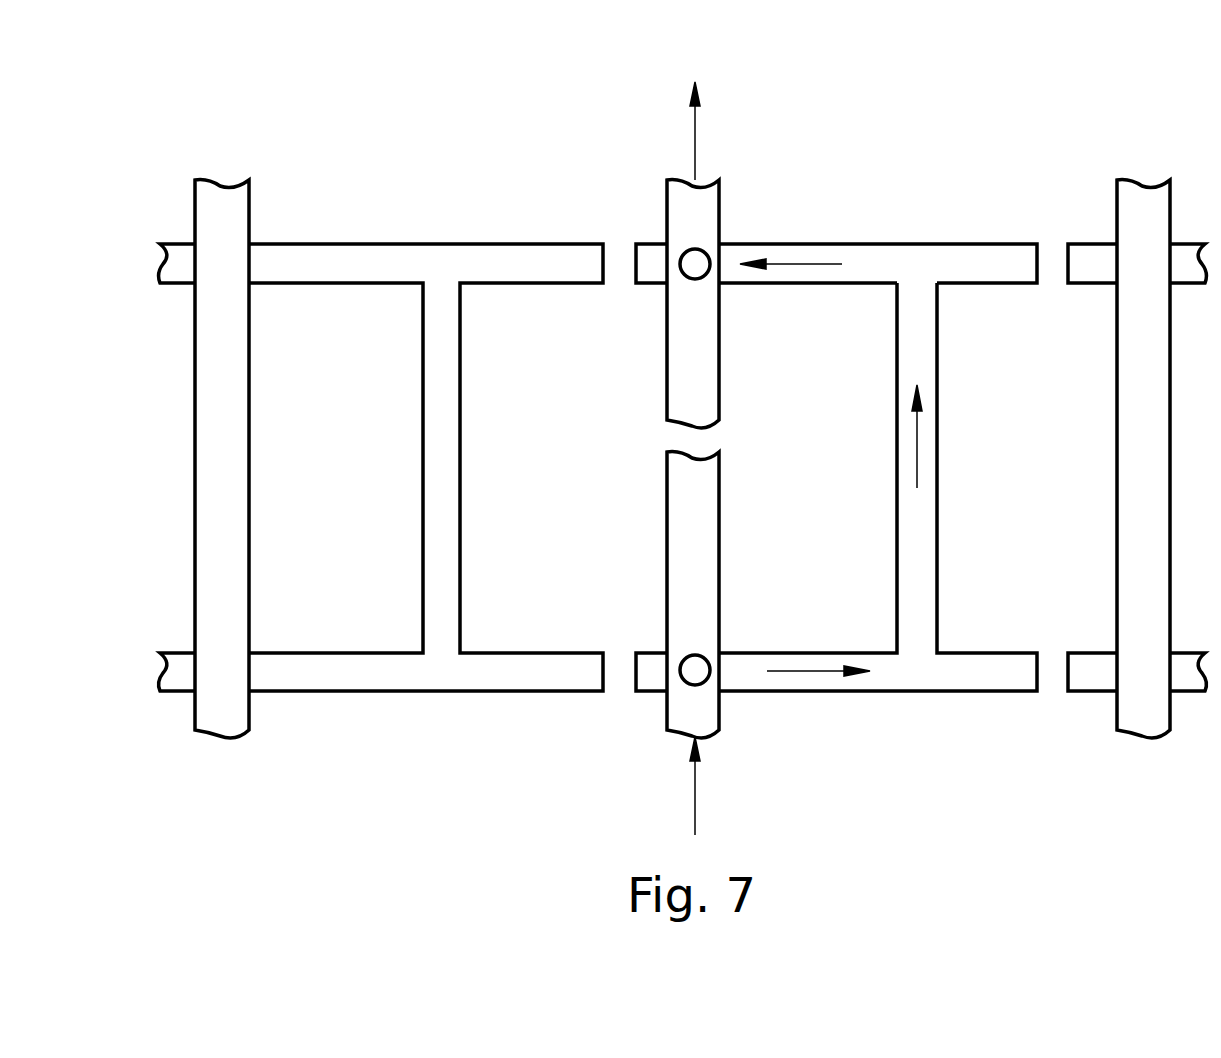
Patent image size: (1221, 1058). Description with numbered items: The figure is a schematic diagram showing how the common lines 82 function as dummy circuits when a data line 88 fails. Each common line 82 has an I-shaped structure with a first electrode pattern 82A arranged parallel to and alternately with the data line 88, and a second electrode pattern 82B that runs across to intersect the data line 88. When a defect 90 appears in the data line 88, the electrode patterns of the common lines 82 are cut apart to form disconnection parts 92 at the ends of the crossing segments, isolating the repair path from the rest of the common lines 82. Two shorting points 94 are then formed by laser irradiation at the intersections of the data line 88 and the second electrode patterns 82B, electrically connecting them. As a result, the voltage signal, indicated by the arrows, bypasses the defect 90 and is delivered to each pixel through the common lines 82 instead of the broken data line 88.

The common line 82 is at (683, 432).
The first electrode pattern 82A is at (897, 518).
The second electrode pattern 82B is at (880, 243).
The data line 88 is at (703, 210).
The defect 90 is at (655, 440).
The disconnection part 92 is at (622, 238).
The shorting point 94 is at (688, 249).